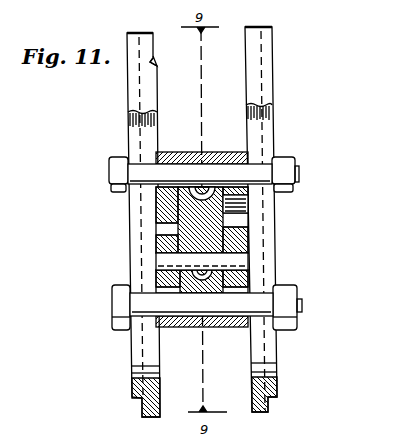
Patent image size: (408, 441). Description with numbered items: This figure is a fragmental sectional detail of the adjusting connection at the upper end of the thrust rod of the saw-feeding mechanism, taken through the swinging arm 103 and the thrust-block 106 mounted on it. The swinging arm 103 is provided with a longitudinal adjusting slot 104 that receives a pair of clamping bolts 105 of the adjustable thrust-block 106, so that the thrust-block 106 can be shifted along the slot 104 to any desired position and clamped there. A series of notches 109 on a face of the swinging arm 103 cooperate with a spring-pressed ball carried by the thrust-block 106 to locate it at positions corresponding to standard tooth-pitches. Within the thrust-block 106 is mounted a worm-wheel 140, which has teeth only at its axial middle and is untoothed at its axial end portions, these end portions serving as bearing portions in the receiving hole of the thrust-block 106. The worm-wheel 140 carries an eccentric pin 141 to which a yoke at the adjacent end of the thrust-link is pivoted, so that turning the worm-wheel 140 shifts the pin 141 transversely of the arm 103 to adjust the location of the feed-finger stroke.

The swinging arm 103 is at (142, 411).
The longitudinal adjusting slot 104 is at (132, 235).
The clamping bolts 105 is at (252, 165).
The thrust-block 106 is at (158, 205).
The notches 109 is at (152, 63).
The worm-wheel 140 is at (228, 213).
The eccentric pin 141 is at (238, 258).